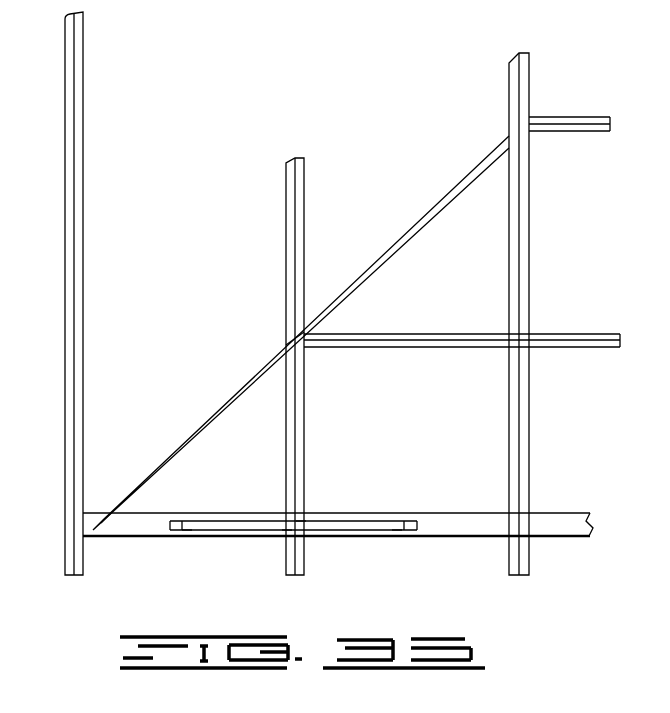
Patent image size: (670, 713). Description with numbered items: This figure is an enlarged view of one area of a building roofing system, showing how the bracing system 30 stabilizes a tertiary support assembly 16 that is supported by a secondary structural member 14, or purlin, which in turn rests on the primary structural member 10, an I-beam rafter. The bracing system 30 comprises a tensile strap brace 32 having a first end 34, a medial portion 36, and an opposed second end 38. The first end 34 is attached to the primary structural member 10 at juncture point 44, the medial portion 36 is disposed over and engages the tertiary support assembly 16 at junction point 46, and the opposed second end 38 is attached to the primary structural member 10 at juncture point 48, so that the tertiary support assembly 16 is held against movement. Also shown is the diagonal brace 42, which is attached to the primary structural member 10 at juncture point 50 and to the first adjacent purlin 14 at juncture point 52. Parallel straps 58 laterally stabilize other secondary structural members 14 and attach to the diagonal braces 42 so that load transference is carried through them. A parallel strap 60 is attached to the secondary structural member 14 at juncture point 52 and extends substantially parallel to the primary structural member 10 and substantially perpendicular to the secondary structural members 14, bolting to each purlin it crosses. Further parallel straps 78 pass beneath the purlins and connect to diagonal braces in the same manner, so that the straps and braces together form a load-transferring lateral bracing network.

The primary structural member 10 is at (118, 541).
The secondary structural member 14 is at (86, 215).
The tertiary support assembly 16 is at (308, 437).
The bracing system 30 is at (228, 541).
The tensile strap brace 32 is at (341, 530).
The first end 34 is at (173, 520).
The medial portion 36 is at (300, 518).
The opposed second end 38 is at (407, 520).
The diagonal brace 42 is at (238, 391).
The juncture point 44 is at (186, 532).
The junction point 46 is at (291, 535).
The juncture point 48 is at (395, 529).
The juncture point 50 is at (94, 526).
The juncture point 52 is at (293, 337).
The parallel strap 58 is at (563, 132).
The parallel strap 60 is at (348, 348).
The parallel strap 78 is at (568, 118).